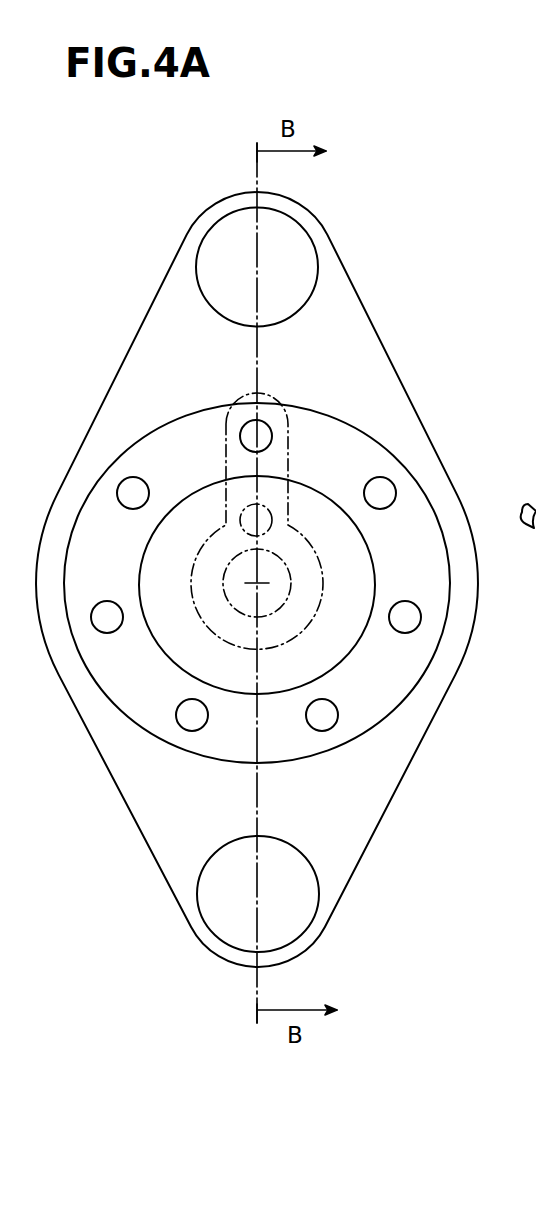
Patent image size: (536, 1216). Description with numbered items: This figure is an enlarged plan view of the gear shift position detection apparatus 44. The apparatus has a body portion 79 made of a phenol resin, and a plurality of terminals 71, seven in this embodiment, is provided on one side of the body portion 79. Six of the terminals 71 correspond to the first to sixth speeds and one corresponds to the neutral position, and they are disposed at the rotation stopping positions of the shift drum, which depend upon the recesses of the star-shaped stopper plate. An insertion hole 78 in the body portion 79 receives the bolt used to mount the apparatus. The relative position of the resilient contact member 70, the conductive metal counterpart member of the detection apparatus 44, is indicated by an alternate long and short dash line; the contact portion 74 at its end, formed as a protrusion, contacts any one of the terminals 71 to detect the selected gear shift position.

The gear shift position detection apparatus 44 is at (113, 213).
The insertion hole 78 is at (288, 257).
The body portion 79 is at (337, 337).
The terminals 71 is at (132, 490).
The contact portion 74 is at (268, 421).
The resilient contact member 70 is at (286, 447).